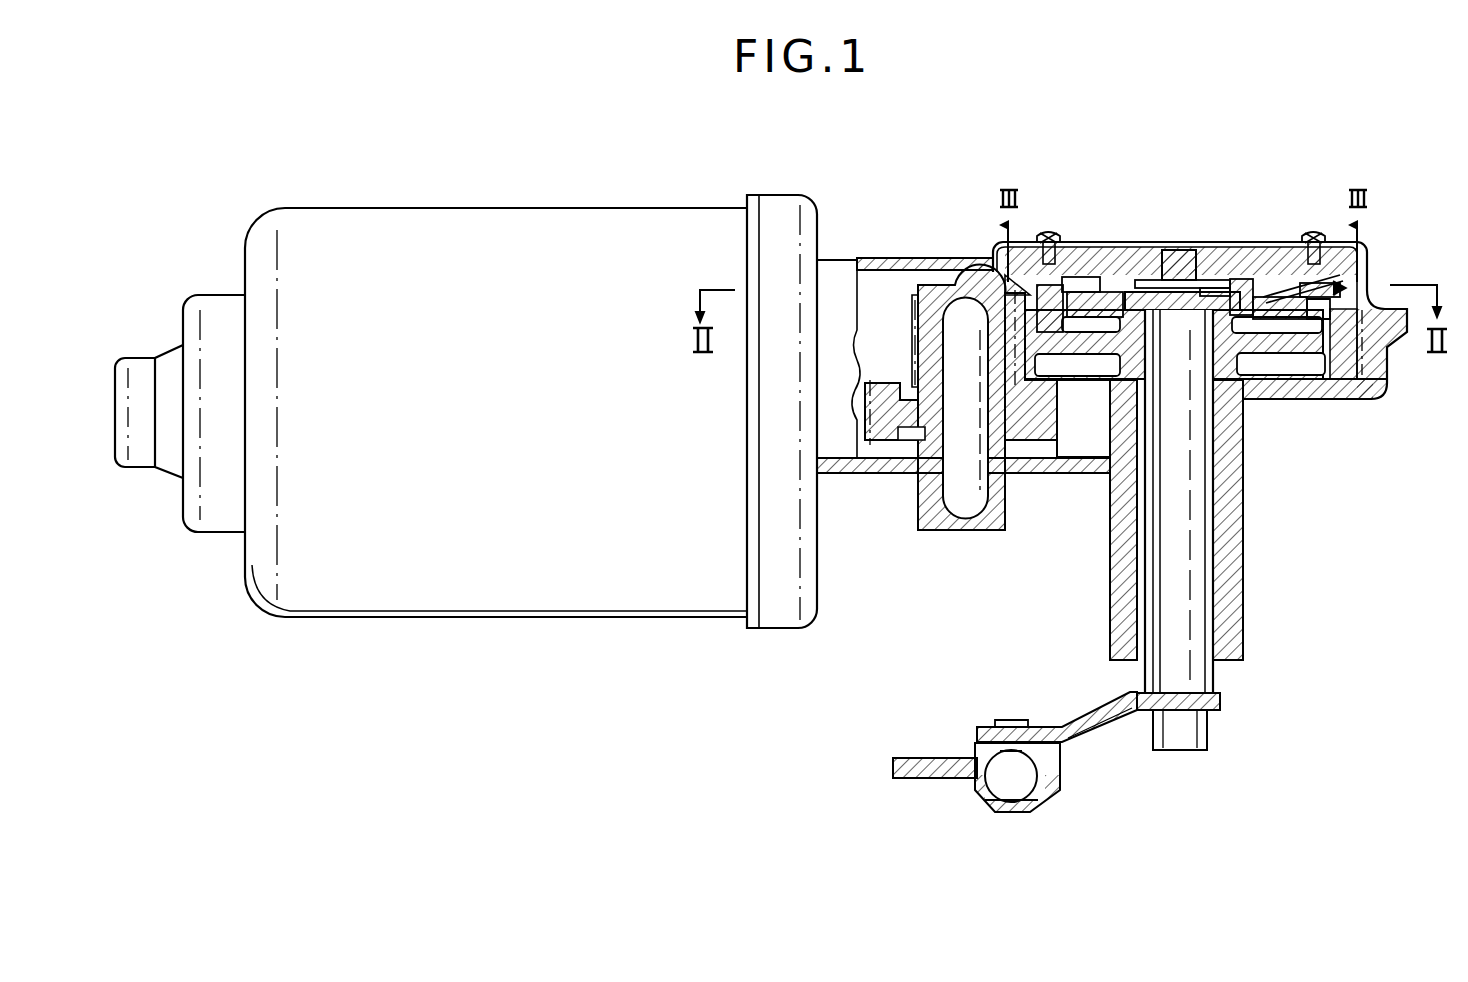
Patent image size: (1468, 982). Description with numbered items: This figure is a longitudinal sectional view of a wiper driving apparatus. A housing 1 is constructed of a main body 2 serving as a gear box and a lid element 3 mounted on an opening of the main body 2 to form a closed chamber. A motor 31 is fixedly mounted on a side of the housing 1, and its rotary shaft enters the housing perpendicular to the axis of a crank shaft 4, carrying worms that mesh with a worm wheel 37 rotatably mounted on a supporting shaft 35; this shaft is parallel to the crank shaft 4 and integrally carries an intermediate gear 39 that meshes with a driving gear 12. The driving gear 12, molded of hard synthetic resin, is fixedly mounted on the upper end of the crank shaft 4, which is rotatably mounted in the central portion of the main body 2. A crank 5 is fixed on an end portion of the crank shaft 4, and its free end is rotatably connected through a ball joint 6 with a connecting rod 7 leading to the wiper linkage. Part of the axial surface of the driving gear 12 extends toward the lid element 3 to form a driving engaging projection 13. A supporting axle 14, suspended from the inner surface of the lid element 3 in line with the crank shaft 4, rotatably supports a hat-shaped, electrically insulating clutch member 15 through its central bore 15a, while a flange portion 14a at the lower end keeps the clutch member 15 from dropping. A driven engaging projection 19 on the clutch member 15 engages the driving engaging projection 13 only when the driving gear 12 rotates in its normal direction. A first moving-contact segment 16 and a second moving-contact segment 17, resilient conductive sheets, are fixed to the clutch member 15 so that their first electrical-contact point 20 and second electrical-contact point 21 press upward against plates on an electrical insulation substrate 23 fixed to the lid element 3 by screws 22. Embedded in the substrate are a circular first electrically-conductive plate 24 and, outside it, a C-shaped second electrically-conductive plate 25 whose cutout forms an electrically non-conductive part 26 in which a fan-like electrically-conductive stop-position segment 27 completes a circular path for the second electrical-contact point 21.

The housing 1 is at (882, 252).
The main body 2 is at (890, 475).
The lid element 3 is at (907, 258).
The crank shaft 4 is at (1215, 690).
The crank 5 is at (1092, 722).
The ball joint 6 is at (1035, 806).
The connecting rod 7 is at (920, 756).
The driving gear 12 is at (1362, 400).
The driving engaging projection 13 is at (1050, 385).
The supporting axle 14 is at (1178, 248).
The flange portion 14a is at (1152, 280).
The clutch member 15 is at (1240, 280).
The central bore 15a is at (1222, 288).
The first moving-contact segment 16 is at (1118, 292).
The second moving-contact segment 17 is at (1376, 347).
The driven engaging projection 19 is at (1075, 290).
The first electrical-contact point 20 is at (1080, 278).
The second electrical-contact point 21 is at (1342, 284).
The screws 22 is at (1315, 236).
The electrical insulation substrate 23 is at (1292, 275).
The first electrically-conductive plate 24 is at (1275, 295).
The second electrically-conductive plate 25 is at (1322, 283).
The electrically non-conductive part 26 is at (1010, 275).
The electrically-conductive stop-position segment 27 is at (1048, 236).
The motor 31 is at (740, 200).
The supporting shaft 35 is at (965, 520).
The worm wheel 37 is at (865, 410).
The intermediate gear 39 is at (910, 328).